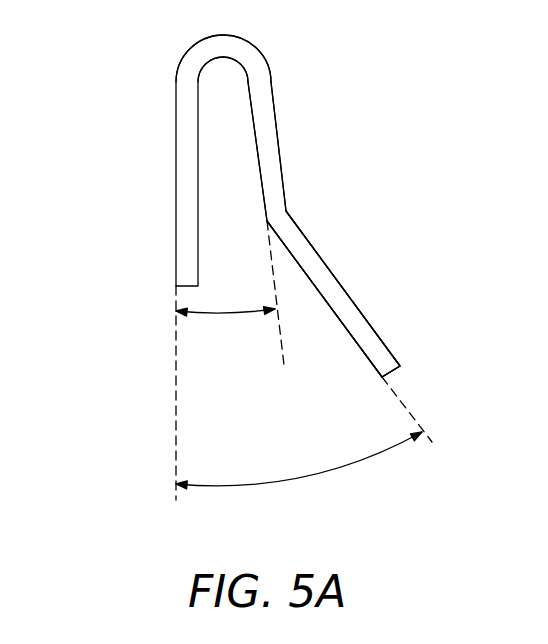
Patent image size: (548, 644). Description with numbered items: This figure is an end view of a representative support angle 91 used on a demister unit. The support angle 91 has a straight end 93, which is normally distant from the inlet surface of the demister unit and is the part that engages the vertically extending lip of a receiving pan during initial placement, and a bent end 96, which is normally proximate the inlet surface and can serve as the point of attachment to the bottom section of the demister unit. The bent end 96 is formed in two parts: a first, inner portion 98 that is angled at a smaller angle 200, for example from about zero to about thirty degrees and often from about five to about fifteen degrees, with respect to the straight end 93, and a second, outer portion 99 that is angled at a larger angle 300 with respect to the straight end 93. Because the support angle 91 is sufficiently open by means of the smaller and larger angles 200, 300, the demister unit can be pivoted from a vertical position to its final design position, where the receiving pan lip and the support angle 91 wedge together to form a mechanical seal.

The support angle 91 is at (233, 189).
The straight end 93 is at (177, 148).
The inner portion 98 is at (263, 56).
The bent end 96 is at (303, 158).
The outer portion 99 is at (333, 273).
The smaller angle 200 is at (227, 313).
The larger angle 300 is at (303, 477).